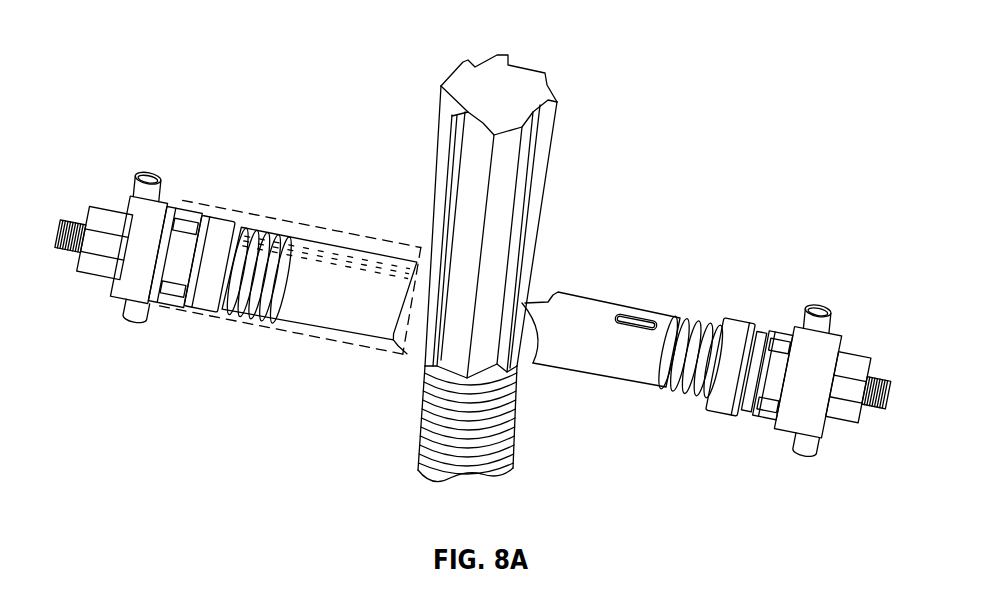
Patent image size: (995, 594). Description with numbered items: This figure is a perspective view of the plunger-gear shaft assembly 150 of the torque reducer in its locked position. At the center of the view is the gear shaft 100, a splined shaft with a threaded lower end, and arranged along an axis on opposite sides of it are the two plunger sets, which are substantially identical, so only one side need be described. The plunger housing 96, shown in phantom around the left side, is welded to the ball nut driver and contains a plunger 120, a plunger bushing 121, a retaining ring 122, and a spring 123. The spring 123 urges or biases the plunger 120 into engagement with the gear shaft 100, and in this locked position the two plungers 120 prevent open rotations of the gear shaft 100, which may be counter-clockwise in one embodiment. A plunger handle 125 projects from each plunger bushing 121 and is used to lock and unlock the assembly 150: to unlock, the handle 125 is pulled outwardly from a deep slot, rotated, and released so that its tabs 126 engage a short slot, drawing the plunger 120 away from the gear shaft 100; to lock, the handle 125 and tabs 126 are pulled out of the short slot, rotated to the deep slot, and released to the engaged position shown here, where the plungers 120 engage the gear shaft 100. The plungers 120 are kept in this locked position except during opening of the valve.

The plunger-gear shaft assembly 150 is at (472, 247).
The gear shaft 100 is at (518, 92).
The plunger housing 96 is at (282, 222).
The plunger 120 is at (337, 315).
The plunger bushing 121 is at (793, 405).
The retaining ring 122 is at (213, 302).
The spring 123 is at (683, 388).
The plunger handle 125 is at (148, 172).
The tab 126 is at (183, 207).